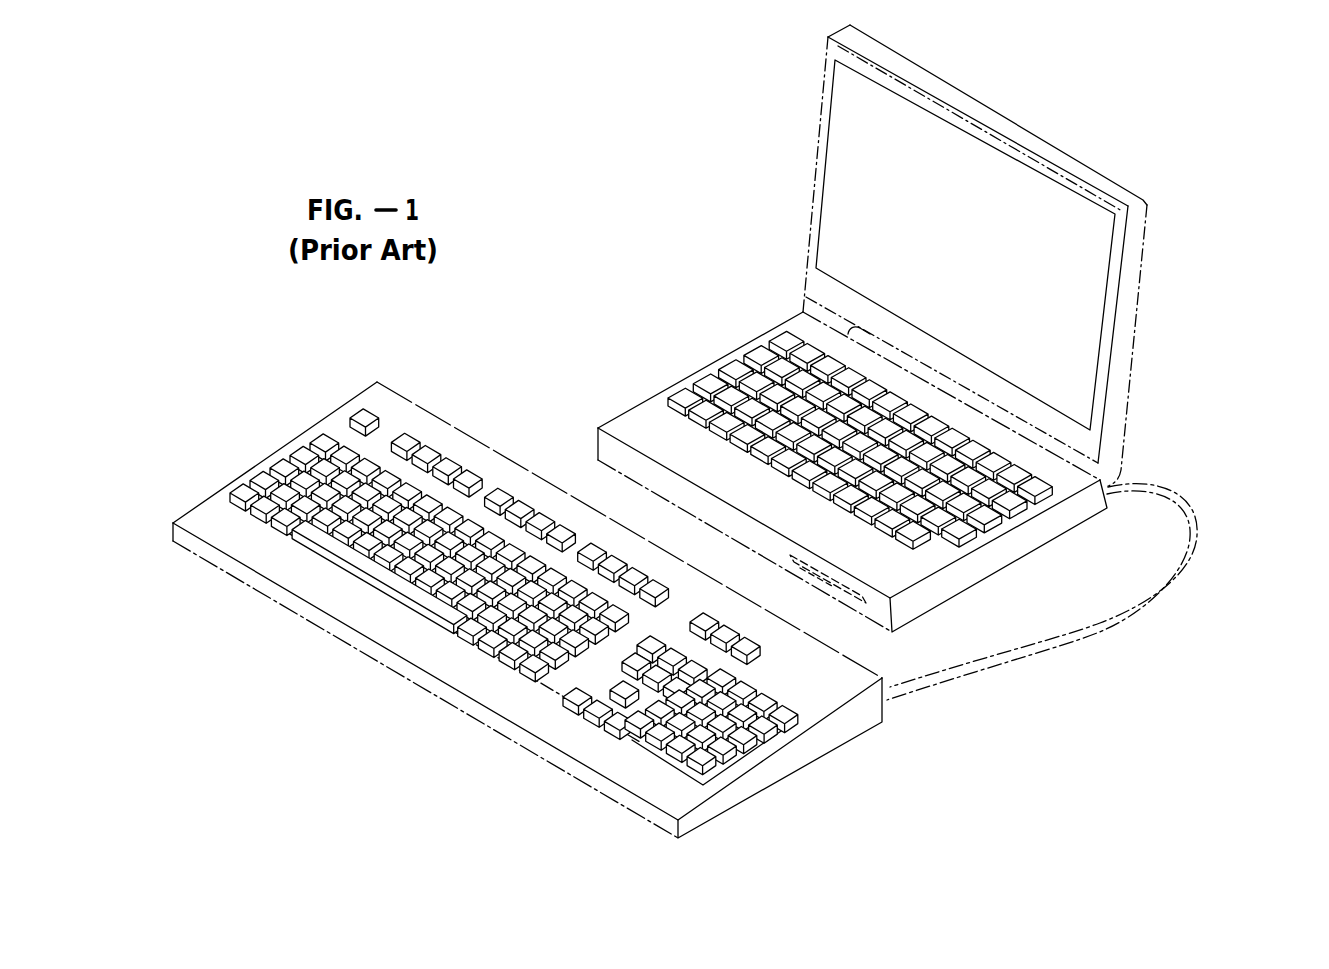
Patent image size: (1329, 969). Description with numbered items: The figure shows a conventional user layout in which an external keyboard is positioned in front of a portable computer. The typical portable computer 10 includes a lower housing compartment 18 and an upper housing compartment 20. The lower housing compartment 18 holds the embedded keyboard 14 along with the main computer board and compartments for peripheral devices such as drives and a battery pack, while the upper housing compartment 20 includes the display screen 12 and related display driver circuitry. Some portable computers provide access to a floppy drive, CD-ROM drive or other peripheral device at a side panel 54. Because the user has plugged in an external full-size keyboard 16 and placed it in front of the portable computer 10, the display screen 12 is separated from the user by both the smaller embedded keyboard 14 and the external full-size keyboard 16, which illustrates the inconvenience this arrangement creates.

The portable computer 10 is at (948, 328).
The display screen 12 is at (954, 236).
The embedded keyboard 14 is at (680, 378).
The external full-size keyboard 16 is at (868, 762).
The lower housing compartment 18 is at (726, 314).
The upper housing compartment 20 is at (930, 255).
The side panel 54 is at (975, 574).